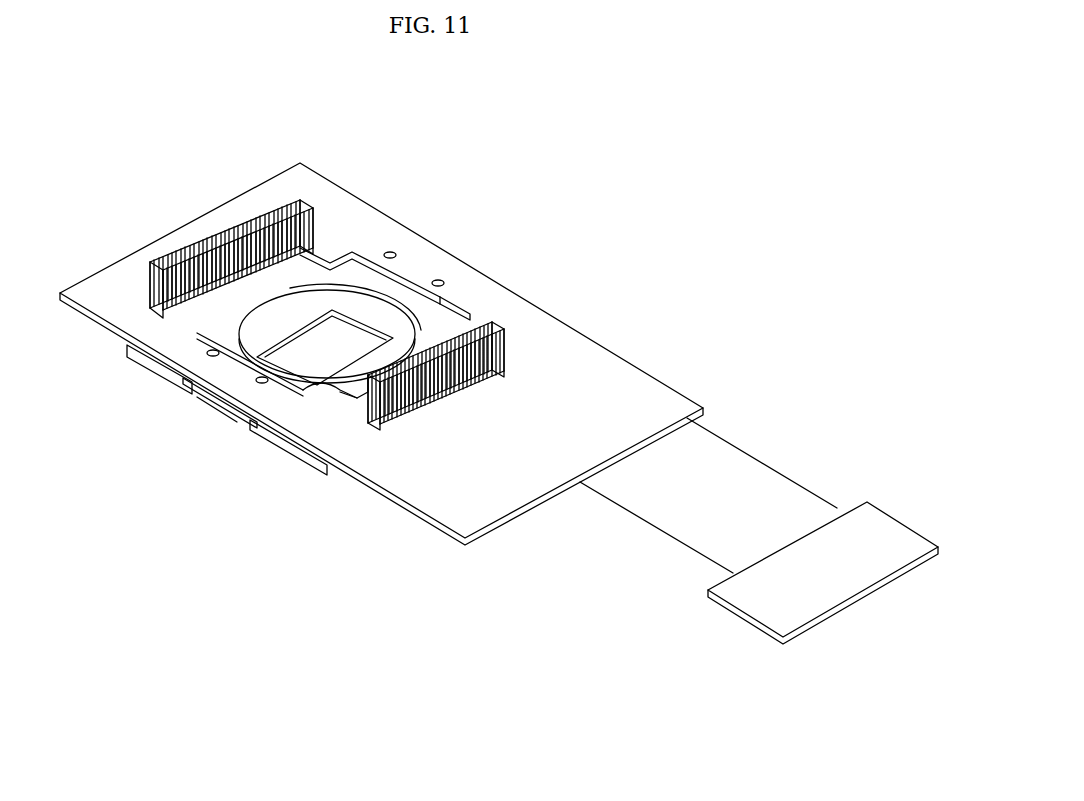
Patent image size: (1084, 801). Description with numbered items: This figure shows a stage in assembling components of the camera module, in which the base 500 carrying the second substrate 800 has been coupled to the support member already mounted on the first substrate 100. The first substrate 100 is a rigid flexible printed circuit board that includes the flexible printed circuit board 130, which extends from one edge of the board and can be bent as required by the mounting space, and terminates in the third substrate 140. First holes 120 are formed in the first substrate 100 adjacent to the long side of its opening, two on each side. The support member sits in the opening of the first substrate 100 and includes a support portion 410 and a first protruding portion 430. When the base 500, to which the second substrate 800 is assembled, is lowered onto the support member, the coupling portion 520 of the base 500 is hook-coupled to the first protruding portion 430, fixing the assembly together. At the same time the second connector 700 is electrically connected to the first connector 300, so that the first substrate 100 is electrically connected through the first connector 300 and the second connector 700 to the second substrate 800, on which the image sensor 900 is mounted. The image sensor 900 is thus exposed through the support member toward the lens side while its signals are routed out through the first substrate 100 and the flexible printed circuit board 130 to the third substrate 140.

The first substrate 100 is at (641, 388).
The first hole 120 is at (441, 280).
The flexible printed circuit board 130 is at (782, 487).
The third substrate 140 is at (885, 523).
The first connector 300 is at (187, 240).
The support portion 410 is at (317, 277).
The first protruding portion 430 is at (400, 287).
The base 500 is at (277, 433).
The coupling portion 520 is at (230, 410).
The second connector 700 is at (283, 225).
The second substrate 800 is at (150, 372).
The image sensor 900 is at (330, 330).